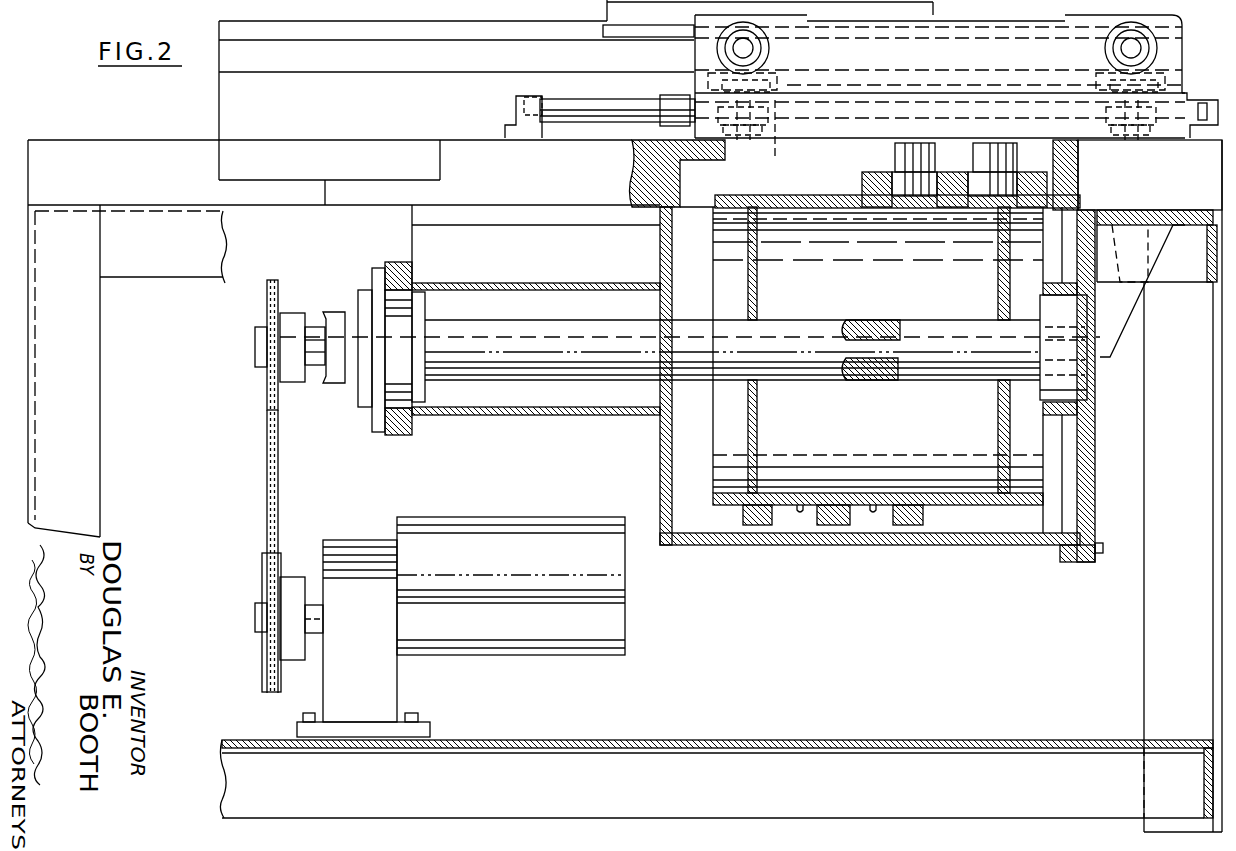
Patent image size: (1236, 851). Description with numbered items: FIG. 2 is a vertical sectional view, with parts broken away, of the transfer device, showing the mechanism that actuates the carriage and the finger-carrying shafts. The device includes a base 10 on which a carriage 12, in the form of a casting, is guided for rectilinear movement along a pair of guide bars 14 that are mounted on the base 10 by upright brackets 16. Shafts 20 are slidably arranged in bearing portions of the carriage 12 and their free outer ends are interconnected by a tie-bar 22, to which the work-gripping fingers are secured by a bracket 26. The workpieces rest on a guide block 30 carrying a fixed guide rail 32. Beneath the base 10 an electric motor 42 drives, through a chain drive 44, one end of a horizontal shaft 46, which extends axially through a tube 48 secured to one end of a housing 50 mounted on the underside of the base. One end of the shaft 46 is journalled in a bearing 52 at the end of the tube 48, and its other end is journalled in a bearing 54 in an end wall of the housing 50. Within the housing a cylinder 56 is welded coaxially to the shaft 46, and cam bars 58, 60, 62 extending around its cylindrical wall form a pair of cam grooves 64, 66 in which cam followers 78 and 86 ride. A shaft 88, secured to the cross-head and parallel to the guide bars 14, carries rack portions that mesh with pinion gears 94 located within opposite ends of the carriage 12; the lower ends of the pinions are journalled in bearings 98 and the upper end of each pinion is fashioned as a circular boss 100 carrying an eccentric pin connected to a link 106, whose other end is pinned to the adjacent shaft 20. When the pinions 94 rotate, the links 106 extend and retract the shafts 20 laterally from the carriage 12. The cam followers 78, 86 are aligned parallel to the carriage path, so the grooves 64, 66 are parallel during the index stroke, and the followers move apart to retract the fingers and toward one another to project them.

The base 10 is at (142, 138).
The carriage 12 is at (1188, 66).
The guide bars 14 is at (645, 115).
The upright brackets 16 is at (512, 125).
The shaft 20 is at (737, 46).
The tie-bar 22 is at (620, 34).
The bracket 26 is at (945, 0).
The guide block 30 is at (382, 126).
The fixed guide rail 32 is at (370, 22).
The electric motor 42 is at (556, 521).
The chain drive 44 is at (278, 492).
The shaft 46 is at (527, 324).
The tube 48 is at (552, 413).
The housing 50 is at (898, 545).
The bearing 52 is at (372, 413).
The bearing 54 is at (1070, 312).
The cylinder 56 is at (844, 208).
The cam bar 58 is at (766, 525).
The cam bar 60 is at (838, 525).
The cam bar 62 is at (915, 525).
The cam groove 64 is at (800, 505).
The cam groove 66 is at (873, 505).
The cam follower 78 is at (899, 175).
The cam follower 86 is at (992, 175).
The shaft 88 is at (856, 114).
The pinion gears 94 is at (775, 140).
The bearings 98 is at (755, 140).
The circular boss 100 is at (720, 75).
The link 106 is at (765, 75).